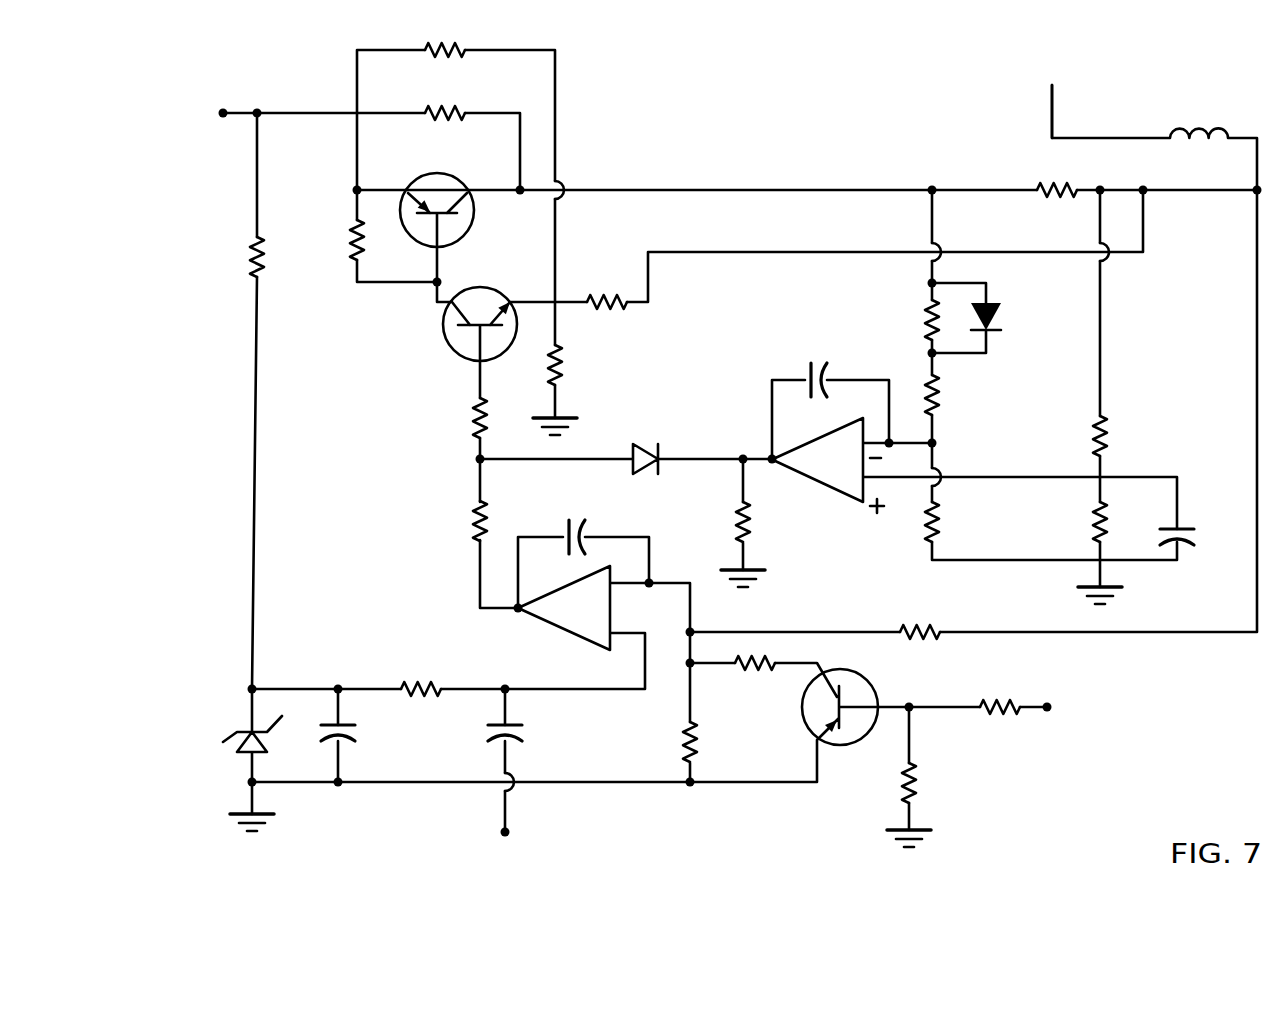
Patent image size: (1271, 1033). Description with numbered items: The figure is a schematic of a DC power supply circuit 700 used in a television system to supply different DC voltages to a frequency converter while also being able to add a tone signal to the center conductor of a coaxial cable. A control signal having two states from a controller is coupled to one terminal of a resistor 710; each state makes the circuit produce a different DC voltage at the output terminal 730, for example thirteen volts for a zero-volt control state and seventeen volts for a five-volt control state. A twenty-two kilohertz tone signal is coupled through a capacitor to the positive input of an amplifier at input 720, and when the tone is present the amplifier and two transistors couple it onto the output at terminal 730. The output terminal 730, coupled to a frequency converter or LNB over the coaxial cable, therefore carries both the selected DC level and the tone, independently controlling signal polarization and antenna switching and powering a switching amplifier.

The DC power supply circuit 700 is at (712, 468).
The resistor 710 is at (1062, 690).
The input terminal for 22 KHz square wave 720 is at (480, 848).
The output terminal 730 is at (1052, 95).